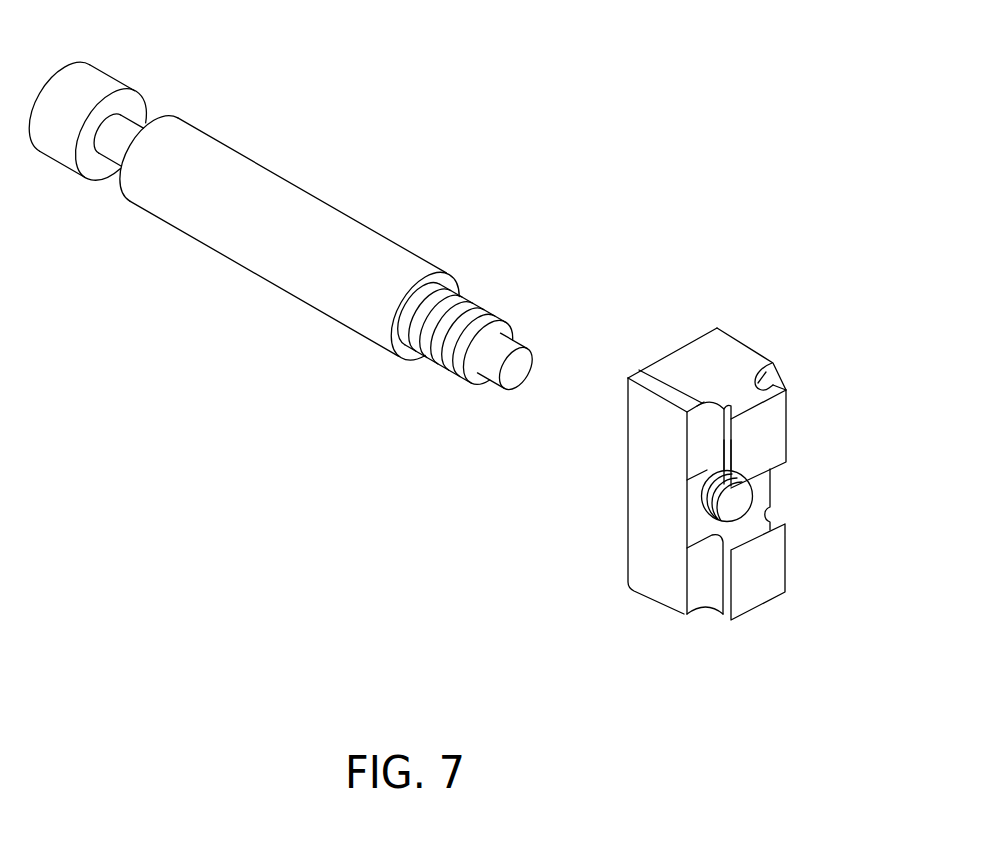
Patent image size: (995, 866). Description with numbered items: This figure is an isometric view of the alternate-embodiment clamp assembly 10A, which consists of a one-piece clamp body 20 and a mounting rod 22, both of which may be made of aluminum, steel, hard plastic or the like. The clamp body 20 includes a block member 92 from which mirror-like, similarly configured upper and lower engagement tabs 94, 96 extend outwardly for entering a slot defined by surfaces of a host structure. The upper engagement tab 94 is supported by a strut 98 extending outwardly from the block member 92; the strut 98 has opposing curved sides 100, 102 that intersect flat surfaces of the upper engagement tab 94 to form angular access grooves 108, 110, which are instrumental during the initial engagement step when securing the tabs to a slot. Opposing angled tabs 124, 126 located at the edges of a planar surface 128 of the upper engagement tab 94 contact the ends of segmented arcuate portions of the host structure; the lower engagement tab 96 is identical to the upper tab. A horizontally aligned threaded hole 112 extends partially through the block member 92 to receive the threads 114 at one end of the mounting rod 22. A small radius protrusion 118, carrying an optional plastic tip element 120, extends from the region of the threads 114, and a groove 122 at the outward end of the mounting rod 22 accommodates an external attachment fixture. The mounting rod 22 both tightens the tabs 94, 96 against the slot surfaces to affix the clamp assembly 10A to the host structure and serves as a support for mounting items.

The clamp assembly 10A is at (454, 326).
The mounting rod 22 is at (328, 214).
The groove 122 is at (152, 110).
The threads 114 is at (472, 297).
The small radius protrusion 118 is at (490, 347).
The plastic tip element 120 is at (523, 365).
The one-piece clamp body 20 is at (705, 417).
The block member 92 is at (693, 348).
The strut 98 is at (740, 392).
The angular access groove 108 is at (639, 370).
The angular access groove 110 is at (772, 372).
The curved side 102 is at (776, 380).
The angled tab 126 is at (778, 388).
The upper engagement tab 94 is at (810, 460).
The planar surface 128 is at (762, 443).
The lower engagement tab 96 is at (785, 583).
The curved side 100 is at (715, 412).
The angled tab 124 is at (703, 443).
The threaded hole 112 is at (720, 503).